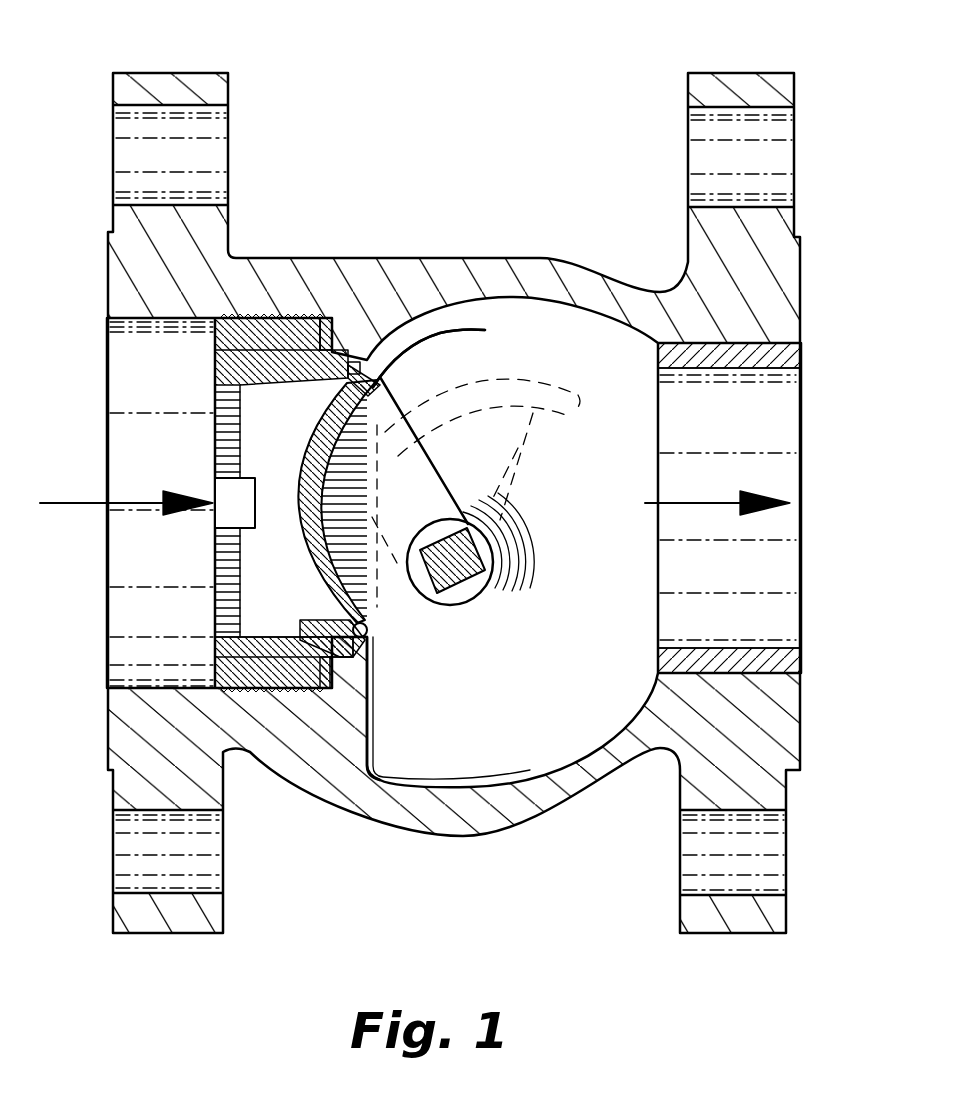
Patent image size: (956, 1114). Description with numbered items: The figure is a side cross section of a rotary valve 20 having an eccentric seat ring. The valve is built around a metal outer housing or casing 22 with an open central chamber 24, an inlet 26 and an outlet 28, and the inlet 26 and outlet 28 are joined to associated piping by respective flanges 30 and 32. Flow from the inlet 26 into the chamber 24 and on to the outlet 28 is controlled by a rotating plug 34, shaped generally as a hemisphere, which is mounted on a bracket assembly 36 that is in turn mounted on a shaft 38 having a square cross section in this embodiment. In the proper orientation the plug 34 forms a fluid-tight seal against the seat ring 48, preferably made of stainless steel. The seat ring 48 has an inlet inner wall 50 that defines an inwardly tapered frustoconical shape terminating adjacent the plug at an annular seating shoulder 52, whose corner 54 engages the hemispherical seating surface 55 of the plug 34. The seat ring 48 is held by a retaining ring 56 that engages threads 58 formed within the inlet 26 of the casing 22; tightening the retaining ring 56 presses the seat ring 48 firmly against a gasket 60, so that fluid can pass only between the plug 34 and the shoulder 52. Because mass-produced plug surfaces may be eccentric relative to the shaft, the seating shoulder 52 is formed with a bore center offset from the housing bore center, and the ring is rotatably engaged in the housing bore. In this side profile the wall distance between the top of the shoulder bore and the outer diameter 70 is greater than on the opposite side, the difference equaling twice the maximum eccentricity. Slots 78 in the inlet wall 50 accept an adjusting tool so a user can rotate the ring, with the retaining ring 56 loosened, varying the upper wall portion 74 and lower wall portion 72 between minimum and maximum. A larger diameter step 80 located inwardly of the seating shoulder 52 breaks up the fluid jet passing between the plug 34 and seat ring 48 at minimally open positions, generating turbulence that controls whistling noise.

The rotary valve 20 is at (473, 142).
The outer housing 22 is at (415, 276).
The central chamber 24 is at (565, 727).
The inlet 26 is at (136, 438).
The outlet 28 is at (788, 407).
The inlet flange 30 is at (168, 918).
The outlet flange 32 is at (730, 918).
The rotating plug 34 is at (377, 387).
The bracket assembly 36 is at (420, 607).
The shaft 38 is at (474, 578).
The seat ring 48 is at (275, 692).
The inlet inner wall 50 is at (268, 624).
The seating shoulder 52 is at (320, 628).
The corner 54 is at (352, 362).
The hemispherical seating surface 55 is at (306, 440).
The retaining ring 56 is at (213, 657).
The threads 58 is at (250, 690).
The gasket 60 is at (371, 692).
The outer diameter 70 is at (300, 317).
The lower wall portion 72 is at (380, 605).
The upper wall portion 74 is at (456, 352).
The slots 78 is at (222, 490).
The step 80 is at (363, 360).